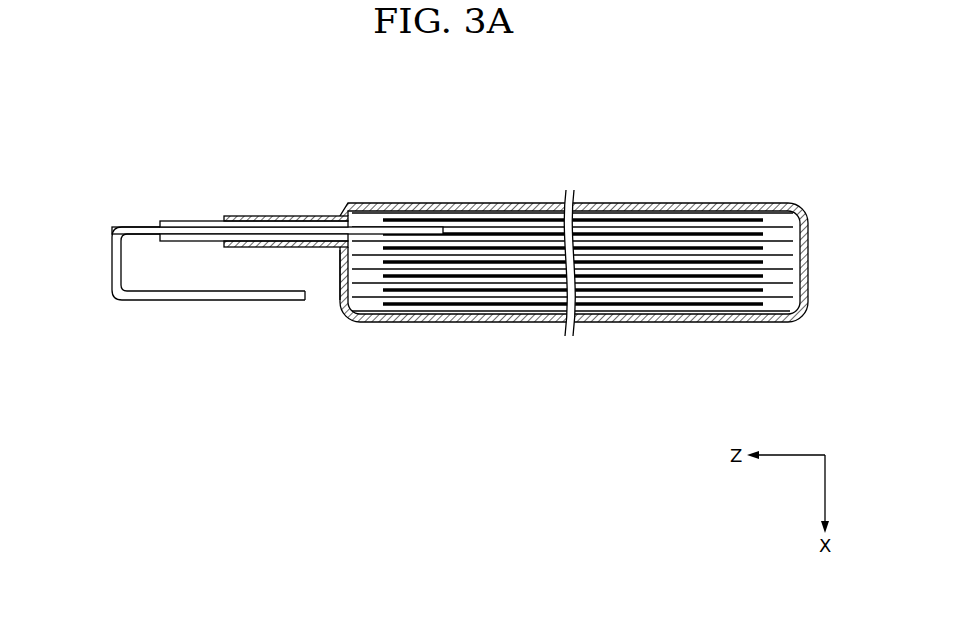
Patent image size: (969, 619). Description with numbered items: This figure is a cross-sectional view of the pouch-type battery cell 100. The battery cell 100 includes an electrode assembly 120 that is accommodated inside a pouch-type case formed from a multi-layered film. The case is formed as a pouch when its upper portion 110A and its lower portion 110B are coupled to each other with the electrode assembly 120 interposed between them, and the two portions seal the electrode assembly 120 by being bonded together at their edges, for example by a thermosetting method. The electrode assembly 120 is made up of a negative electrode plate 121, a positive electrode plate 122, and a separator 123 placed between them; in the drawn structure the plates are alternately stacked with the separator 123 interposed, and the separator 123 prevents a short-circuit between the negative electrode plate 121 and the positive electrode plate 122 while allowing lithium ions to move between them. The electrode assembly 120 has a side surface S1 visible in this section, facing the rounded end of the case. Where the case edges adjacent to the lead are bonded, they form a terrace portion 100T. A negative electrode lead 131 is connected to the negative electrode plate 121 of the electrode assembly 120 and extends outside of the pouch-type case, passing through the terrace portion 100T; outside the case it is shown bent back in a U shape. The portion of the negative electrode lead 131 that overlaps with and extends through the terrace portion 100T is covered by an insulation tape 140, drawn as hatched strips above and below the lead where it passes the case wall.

The battery cell 100 is at (747, 160).
The upper portion 110A is at (435, 205).
The lower portion 110B is at (425, 320).
The side surface S1 is at (342, 270).
The electrode assembly 120 is at (572, 311).
The negative electrode plate 121 is at (668, 310).
The positive electrode plate 122 is at (638, 373).
The separator 123 is at (697, 307).
The negative electrode lead 131 is at (112, 262).
The insulation tape 140 is at (267, 237).
The terrace portion 100T is at (259, 250).